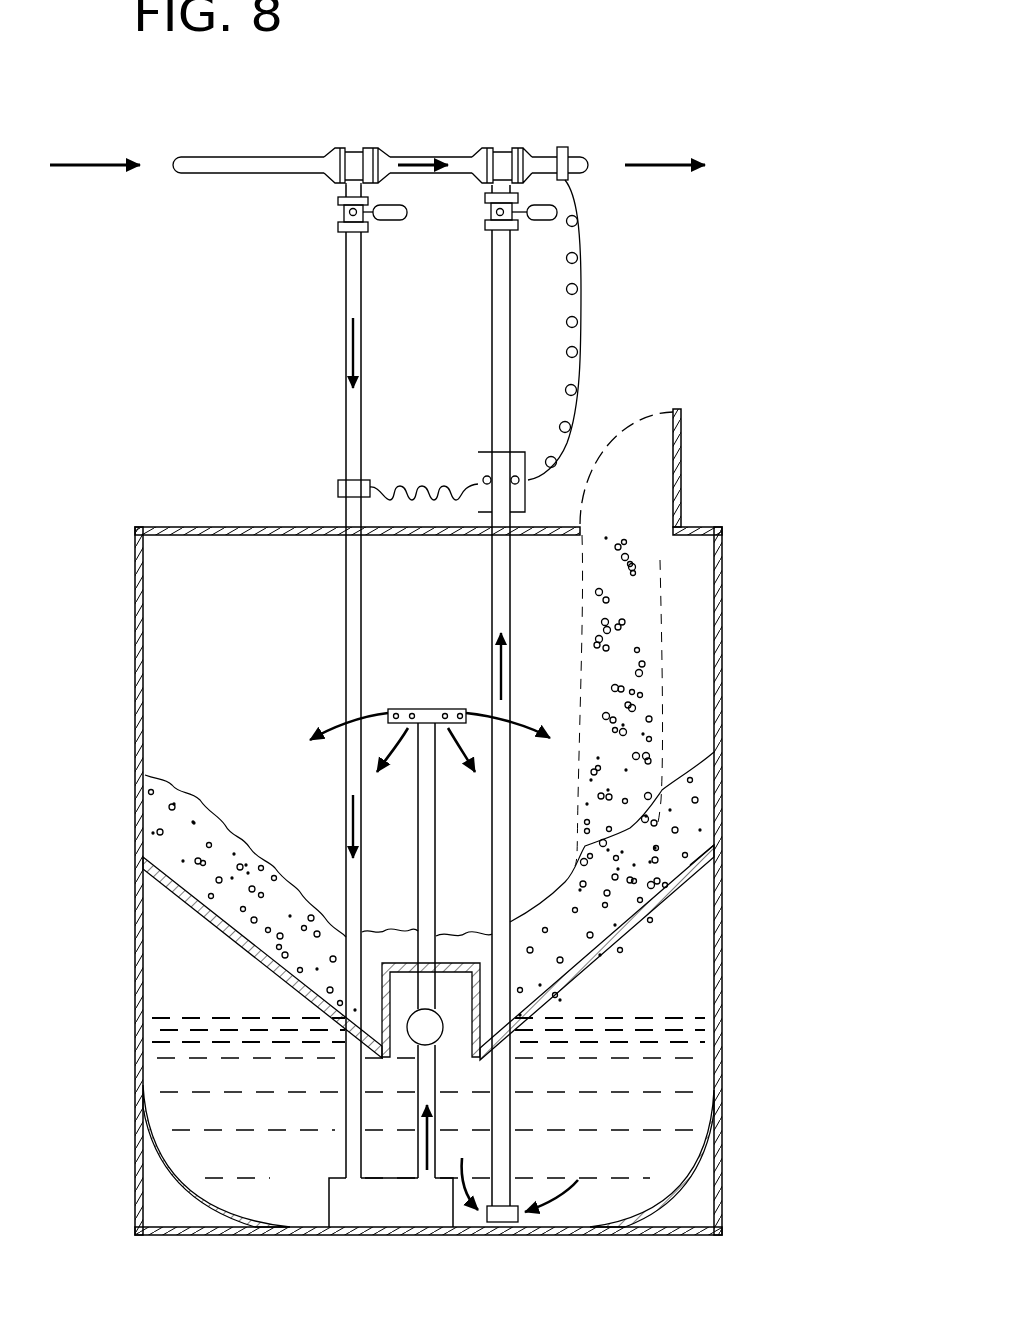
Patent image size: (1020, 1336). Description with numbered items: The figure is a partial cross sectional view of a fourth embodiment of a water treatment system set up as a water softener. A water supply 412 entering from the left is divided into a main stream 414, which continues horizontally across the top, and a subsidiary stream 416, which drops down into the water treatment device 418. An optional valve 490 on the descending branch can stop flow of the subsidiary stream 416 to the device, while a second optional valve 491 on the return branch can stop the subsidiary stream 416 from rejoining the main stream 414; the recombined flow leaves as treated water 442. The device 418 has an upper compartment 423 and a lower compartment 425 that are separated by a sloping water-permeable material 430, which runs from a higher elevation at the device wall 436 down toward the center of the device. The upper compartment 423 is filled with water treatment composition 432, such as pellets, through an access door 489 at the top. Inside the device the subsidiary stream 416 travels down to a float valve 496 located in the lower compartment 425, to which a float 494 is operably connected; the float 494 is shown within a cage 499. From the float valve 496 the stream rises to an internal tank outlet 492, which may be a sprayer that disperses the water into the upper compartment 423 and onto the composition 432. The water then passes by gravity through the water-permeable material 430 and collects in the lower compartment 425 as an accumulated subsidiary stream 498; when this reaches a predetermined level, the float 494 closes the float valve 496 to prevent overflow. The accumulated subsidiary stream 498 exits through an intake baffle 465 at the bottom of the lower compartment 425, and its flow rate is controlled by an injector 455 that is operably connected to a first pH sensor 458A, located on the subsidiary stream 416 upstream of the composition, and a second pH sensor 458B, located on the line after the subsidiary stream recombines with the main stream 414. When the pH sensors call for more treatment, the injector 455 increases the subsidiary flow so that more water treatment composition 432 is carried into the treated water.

The water supply 412 is at (187, 154).
The main stream 414 is at (418, 155).
The subsidiary stream 416 is at (346, 342).
The water treatment device 418 is at (722, 645).
The upper compartment 423 is at (677, 568).
The lower compartment 425 is at (163, 992).
The water-permeable material 430 is at (610, 935).
The water treatment composition 432 is at (678, 815).
The device wall 436 is at (722, 848).
The treated water outlet 442 is at (697, 155).
The injector 455 is at (478, 460).
The first pH sensor 458A is at (338, 487).
The second pH sensor 458B is at (560, 145).
The intake baffle 465 is at (512, 1222).
The access door 489 is at (681, 470).
The valve 490 is at (338, 226).
The valve 491 is at (518, 228).
The internal tank outlet 492 is at (410, 709).
The float 494 is at (413, 1013).
The float valve 496 is at (329, 1205).
The accumulated subsidiary stream 498 is at (695, 1085).
The float cage 499 is at (376, 1017).